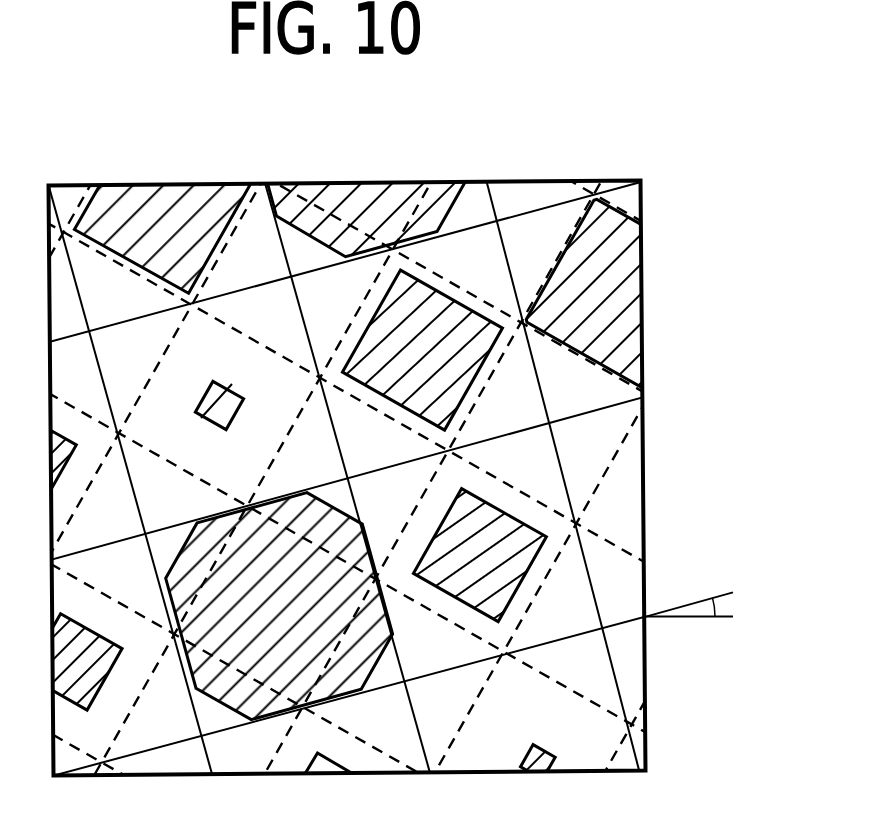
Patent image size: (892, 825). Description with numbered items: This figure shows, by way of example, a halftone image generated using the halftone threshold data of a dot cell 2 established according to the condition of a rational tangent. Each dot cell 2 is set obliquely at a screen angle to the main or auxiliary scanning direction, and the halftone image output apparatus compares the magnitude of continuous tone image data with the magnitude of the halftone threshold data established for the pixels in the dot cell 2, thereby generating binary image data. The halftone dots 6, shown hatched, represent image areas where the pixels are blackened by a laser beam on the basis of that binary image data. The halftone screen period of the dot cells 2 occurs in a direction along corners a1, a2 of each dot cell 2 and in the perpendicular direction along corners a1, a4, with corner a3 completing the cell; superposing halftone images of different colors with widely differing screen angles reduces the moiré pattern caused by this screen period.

The dot cell 2 is at (372, 236).
The halftone dot 6 is at (603, 295).
The corner of dot cell a1 is at (279, 583).
The corner of dot cell a2 is at (502, 498).
The corner of dot cell a3 is at (448, 322).
The corner of dot cell a4 is at (234, 335).